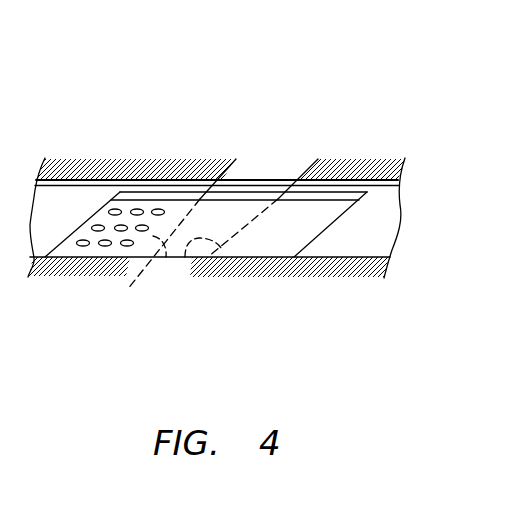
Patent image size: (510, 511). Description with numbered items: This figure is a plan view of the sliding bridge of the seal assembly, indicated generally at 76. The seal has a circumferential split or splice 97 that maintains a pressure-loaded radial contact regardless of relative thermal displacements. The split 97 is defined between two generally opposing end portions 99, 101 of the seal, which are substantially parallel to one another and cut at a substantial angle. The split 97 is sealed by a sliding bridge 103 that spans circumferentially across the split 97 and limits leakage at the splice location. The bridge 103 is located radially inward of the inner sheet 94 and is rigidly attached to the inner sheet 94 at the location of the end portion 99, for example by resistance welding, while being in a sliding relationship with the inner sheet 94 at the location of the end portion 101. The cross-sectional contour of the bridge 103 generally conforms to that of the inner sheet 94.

The optical sensing assembly 76 is at (286, 86).
The circumferential split 97 is at (276, 161).
The inner sheet 94 is at (350, 248).
The sliding bridge 103 is at (340, 221).
The end portion 99 is at (188, 258).
The end portion 101 is at (185, 257).